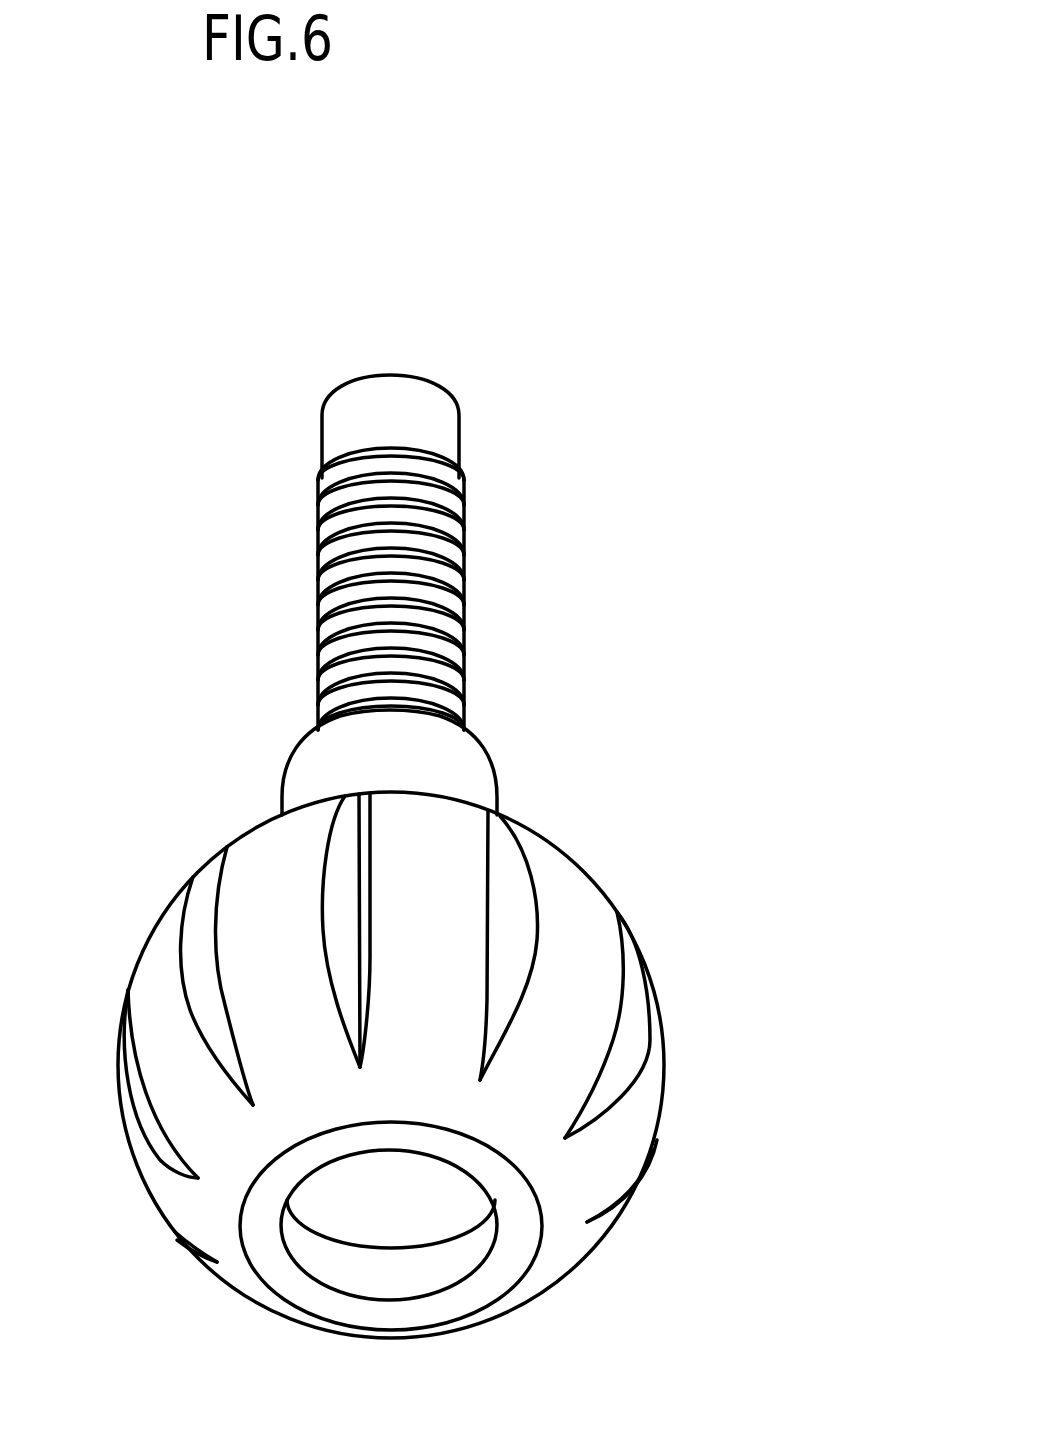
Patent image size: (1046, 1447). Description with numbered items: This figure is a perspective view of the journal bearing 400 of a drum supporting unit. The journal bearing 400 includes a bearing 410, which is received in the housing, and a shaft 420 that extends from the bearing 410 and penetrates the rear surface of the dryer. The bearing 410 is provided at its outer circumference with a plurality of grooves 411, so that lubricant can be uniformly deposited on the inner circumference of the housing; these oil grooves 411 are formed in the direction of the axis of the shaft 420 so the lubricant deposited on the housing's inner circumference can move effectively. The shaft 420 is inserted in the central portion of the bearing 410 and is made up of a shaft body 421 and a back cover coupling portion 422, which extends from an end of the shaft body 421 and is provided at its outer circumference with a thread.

The journal bearing 400 is at (565, 352).
The bearing 410 is at (652, 1093).
The grooves 411 is at (200, 940).
The shaft 420 is at (762, 473).
The shaft body 421 is at (457, 777).
The back cover coupling portion 422 is at (420, 548).